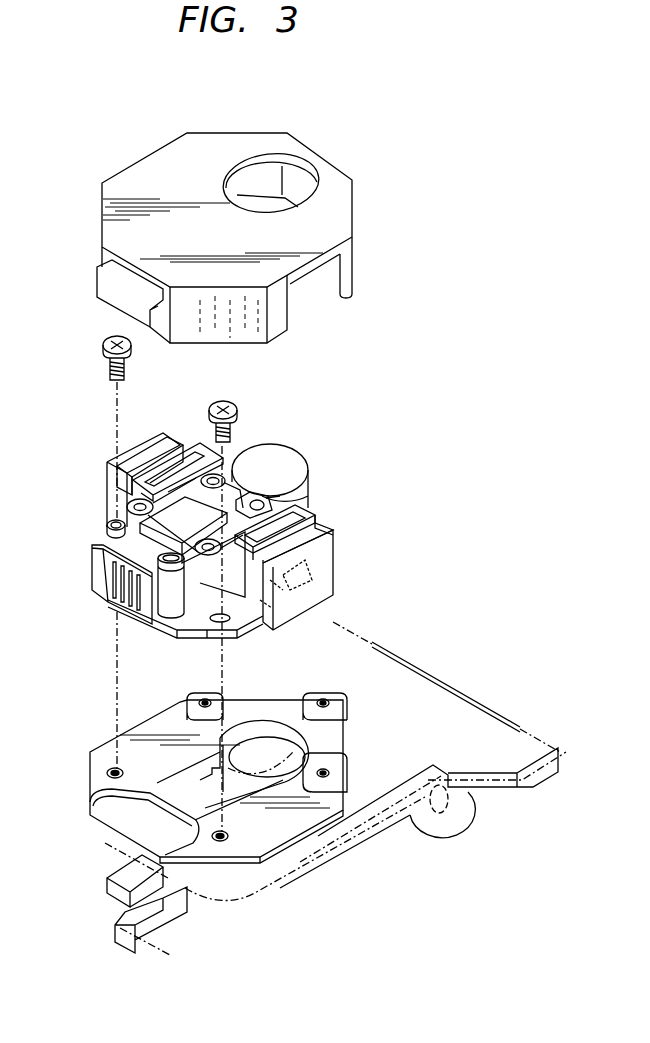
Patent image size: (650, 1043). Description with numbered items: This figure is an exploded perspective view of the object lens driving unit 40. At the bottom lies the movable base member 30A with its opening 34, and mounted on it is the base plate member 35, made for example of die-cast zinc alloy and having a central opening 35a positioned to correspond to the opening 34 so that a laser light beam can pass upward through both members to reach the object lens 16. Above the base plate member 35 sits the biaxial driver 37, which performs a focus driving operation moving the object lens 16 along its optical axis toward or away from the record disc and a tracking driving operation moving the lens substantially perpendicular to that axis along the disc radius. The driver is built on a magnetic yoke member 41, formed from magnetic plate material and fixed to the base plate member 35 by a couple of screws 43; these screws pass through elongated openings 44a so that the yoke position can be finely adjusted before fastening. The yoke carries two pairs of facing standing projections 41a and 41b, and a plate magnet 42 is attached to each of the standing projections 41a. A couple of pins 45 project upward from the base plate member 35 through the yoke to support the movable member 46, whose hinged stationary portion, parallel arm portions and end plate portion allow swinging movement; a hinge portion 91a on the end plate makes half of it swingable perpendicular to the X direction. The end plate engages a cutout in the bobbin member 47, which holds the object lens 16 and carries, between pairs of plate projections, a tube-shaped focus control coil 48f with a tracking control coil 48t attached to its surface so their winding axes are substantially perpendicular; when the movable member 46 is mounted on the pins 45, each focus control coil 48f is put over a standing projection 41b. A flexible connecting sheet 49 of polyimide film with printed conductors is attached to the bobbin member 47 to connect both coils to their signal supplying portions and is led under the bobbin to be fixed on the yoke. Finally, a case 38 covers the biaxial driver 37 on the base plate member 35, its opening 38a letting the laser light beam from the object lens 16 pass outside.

The object lens 16 is at (267, 450).
The movable base member 30A is at (370, 833).
The opening 34 is at (267, 752).
The base plate member 35 is at (95, 768).
The opening 35a is at (289, 722).
The biaxial driver 37 is at (351, 595).
The case 38 is at (347, 217).
The opening 38a is at (238, 162).
The object lens driving unit 40 is at (422, 343).
The magnetic yoke member 41 is at (205, 640).
The standing projections 41a is at (140, 450).
The standing projections 41b is at (118, 466).
The plate magnet 42 is at (137, 467).
The screws 43 is at (103, 343).
The elongated opening 44a is at (232, 620).
The pins 45 is at (106, 528).
The movable member 46 is at (130, 513).
The bobbin member 47 is at (310, 487).
The focus control coil 48f is at (207, 455).
The tracking control coil 48t is at (137, 483).
The flexible connecting sheet 49 is at (272, 500).
The hinge portion 91a is at (240, 495).